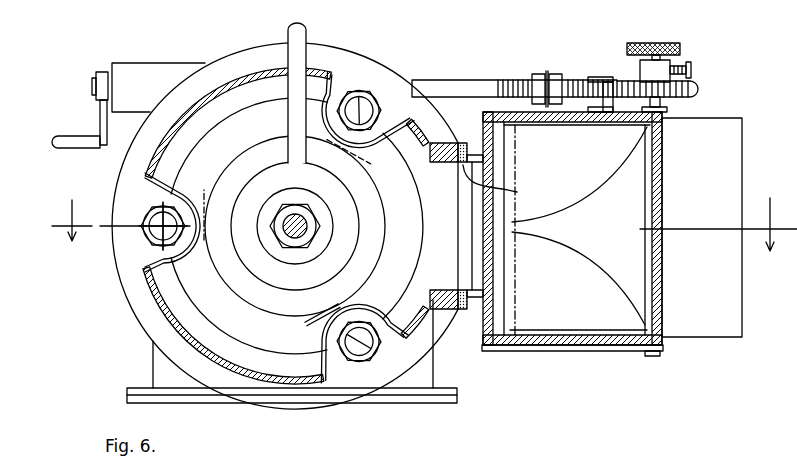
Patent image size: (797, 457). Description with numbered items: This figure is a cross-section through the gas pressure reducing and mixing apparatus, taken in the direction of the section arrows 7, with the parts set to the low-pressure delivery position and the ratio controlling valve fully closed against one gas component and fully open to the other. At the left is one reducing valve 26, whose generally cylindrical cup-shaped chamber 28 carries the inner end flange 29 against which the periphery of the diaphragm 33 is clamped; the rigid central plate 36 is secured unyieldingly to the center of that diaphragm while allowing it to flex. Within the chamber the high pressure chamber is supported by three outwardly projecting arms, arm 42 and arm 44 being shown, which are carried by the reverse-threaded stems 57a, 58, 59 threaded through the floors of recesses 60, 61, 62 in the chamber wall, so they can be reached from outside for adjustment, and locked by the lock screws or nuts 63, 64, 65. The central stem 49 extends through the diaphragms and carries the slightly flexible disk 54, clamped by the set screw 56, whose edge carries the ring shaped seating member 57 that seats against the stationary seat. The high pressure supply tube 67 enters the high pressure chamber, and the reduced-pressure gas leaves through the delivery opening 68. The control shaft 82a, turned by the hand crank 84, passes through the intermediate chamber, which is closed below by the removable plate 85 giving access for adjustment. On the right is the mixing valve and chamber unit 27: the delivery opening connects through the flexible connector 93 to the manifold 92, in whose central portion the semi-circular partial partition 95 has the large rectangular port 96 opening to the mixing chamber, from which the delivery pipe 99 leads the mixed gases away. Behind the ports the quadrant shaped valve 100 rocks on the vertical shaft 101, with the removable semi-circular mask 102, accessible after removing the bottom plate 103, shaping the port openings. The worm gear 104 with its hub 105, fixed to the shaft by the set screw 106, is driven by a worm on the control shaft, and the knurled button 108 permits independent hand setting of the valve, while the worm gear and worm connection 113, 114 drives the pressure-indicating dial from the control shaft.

The section line 7- 7 is at (423, 226).
The reducing valve 26 is at (155, 320).
The mixing valve and chamber unit 27 is at (613, 353).
The cylindrical chamber 28 is at (233, 70).
The inner end flange 29 is at (248, 395).
The diaphragm 33 is at (247, 317).
The rigid central plate 36 is at (297, 226).
The arm 42 is at (349, 152).
The arm 44 is at (322, 315).
The stem 49 is at (312, 218).
The slightly flexible disk 54 is at (268, 250).
The set screw 56 is at (313, 232).
The ring shaped seating member 57 is at (250, 190).
The stem 57a is at (359, 111).
The stem 58 is at (163, 226).
The stem 59 is at (359, 341).
The recess 60 is at (358, 120).
The recess 61 is at (172, 222).
The recess 62 is at (351, 335).
The lock screw or nut 63 is at (359, 110).
The lock screw or nut 64 is at (359, 341).
The lock screw or nut 65 is at (163, 226).
The high pressure supply tube 67 is at (300, 28).
The delivery opening 68 is at (443, 283).
The control shaft 82a is at (462, 82).
The hand crank 84 is at (55, 132).
The removable plate 85 is at (383, 397).
The manifold 92 is at (660, 192).
The flexible connector 93 is at (512, 194).
The semi-circular partial partition 95 is at (507, 178).
The port 96 is at (578, 127).
The delivery connection or pipe 99 is at (722, 152).
The quadrant shaped valve 100 is at (579, 174).
The vertical shaft 101 is at (655, 103).
The semi-circular mask 102 is at (578, 278).
The plate 103 is at (537, 345).
The worm gear 104 is at (698, 88).
The hub 105 is at (640, 67).
The set screw 106 is at (690, 62).
The knurled button 108 is at (640, 41).
The worm gear and worm connection 113 is at (510, 83).
The worm gear and worm connection 114 is at (556, 73).